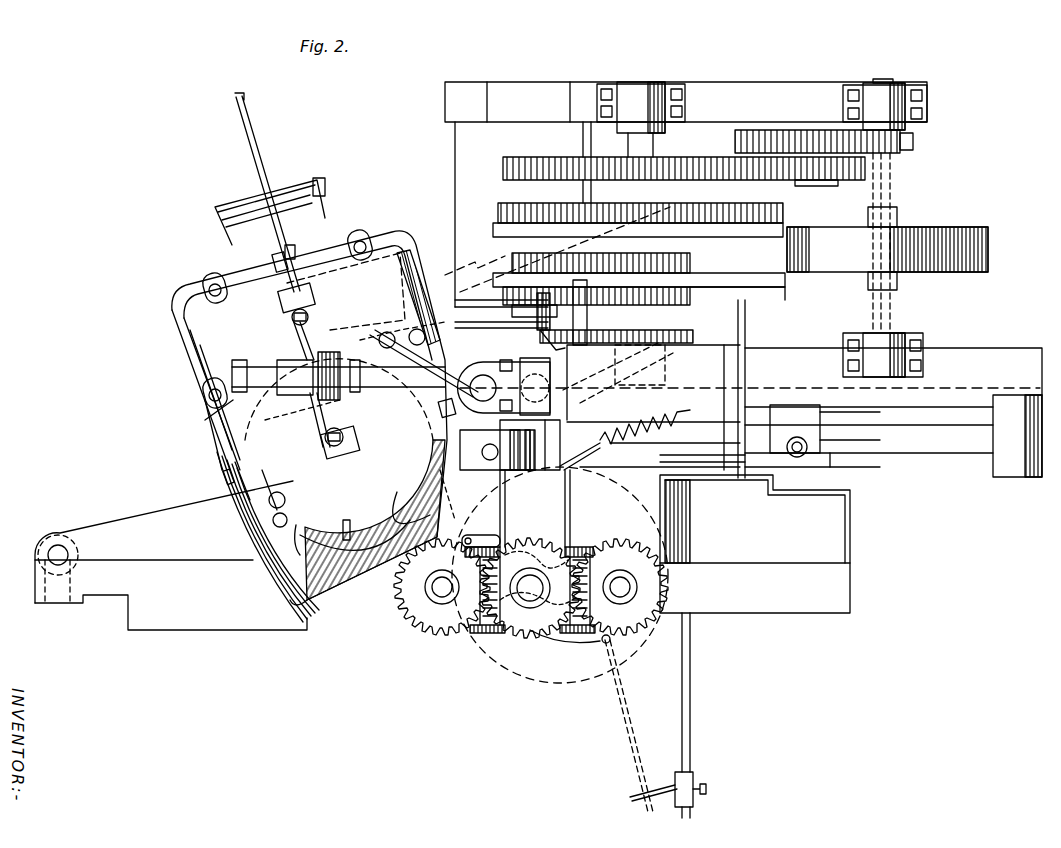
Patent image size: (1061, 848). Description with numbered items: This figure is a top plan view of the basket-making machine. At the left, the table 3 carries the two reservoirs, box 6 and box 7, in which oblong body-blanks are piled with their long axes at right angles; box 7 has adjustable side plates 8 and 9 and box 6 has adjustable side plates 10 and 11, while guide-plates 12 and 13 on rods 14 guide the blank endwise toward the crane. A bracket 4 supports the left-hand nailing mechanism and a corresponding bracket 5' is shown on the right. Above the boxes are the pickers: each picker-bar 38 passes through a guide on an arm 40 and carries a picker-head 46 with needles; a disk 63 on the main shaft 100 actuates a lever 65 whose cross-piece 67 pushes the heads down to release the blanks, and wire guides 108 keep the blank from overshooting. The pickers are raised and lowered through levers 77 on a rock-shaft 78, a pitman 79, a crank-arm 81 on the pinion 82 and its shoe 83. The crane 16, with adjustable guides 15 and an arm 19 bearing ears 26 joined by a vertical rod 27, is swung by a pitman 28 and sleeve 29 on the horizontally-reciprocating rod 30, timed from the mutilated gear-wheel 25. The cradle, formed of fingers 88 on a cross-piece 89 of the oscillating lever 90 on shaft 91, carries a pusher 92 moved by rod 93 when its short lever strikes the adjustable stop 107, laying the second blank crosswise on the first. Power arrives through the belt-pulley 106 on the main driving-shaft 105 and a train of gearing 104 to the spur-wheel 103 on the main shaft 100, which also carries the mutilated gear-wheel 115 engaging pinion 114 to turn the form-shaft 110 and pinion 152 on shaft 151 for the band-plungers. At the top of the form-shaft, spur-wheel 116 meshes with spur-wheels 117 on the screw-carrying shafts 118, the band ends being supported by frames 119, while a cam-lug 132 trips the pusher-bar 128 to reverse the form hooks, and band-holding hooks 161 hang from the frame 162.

The table 3 is at (238, 98).
The bracket 4 is at (171, 555).
The bracket 5' is at (755, 613).
The reservoir 6 is at (309, 542).
The reservoir 7 is at (222, 381).
The adjustable side plate 8 is at (243, 295).
The adjustable side plate 9 is at (220, 375).
The adjustable side plate 10 is at (290, 535).
The adjustable side plate 11 is at (510, 470).
The guide-plate 12 is at (222, 410).
The guide-plate 13 is at (430, 360).
The rod 14 is at (204, 398).
The adjustable guide 15 is at (440, 406).
The crane 16 is at (355, 520).
The arm 19 is at (486, 450).
The mutilated gear-wheel 25 is at (498, 210).
The ear 26 is at (505, 470).
The vertical rod 27 is at (528, 470).
The pitman 28 is at (612, 450).
The sleeve 29 is at (796, 415).
The horizontally-reciprocating rod 30 is at (930, 415).
The picker-bar 38 is at (287, 360).
The arm 40 is at (387, 332).
The picker-head 46 is at (312, 297).
The disk or wheel 63 is at (645, 440).
The lever 65 is at (350, 455).
The cross-piece 67 is at (320, 330).
The lever 77 is at (504, 380).
The rock-shaft 78 is at (550, 330).
The pitman 79 is at (481, 313).
The crank-arm 81 is at (512, 324).
The pinion 82 is at (555, 350).
The shoe 83 is at (660, 343).
The finger 88 is at (256, 220).
The cross-piece 89 is at (318, 178).
The oscillating lever 90 is at (282, 250).
The shaft 91 is at (478, 262).
The pusher 92 is at (248, 206).
The rod 93 is at (256, 130).
The main shaft 100 is at (636, 80).
The spur-wheel 103 is at (752, 170).
The train of gearing 104 is at (782, 133).
The main driving-shaft 105 is at (893, 186).
The belt-pulley 106 is at (887, 249).
The adjustable stop 107 is at (274, 258).
The wire guide 108 is at (410, 470).
The vertical shaft 110 is at (530, 595).
The pinion 114 is at (515, 300).
The mutilated gear-wheel 115 is at (759, 293).
The spur-wheel 116 is at (530, 588).
The spur-wheel 117 is at (442, 580).
The screw-carrying shaft 118 is at (438, 596).
The frame 119 is at (630, 797).
The pusher-bar 128 is at (560, 450).
The cam-lug 132 is at (745, 340).
The shaft 151 is at (578, 298).
The pinion 152 is at (598, 262).
The band-holding hook 161 is at (468, 537).
The frame 162 is at (485, 533).